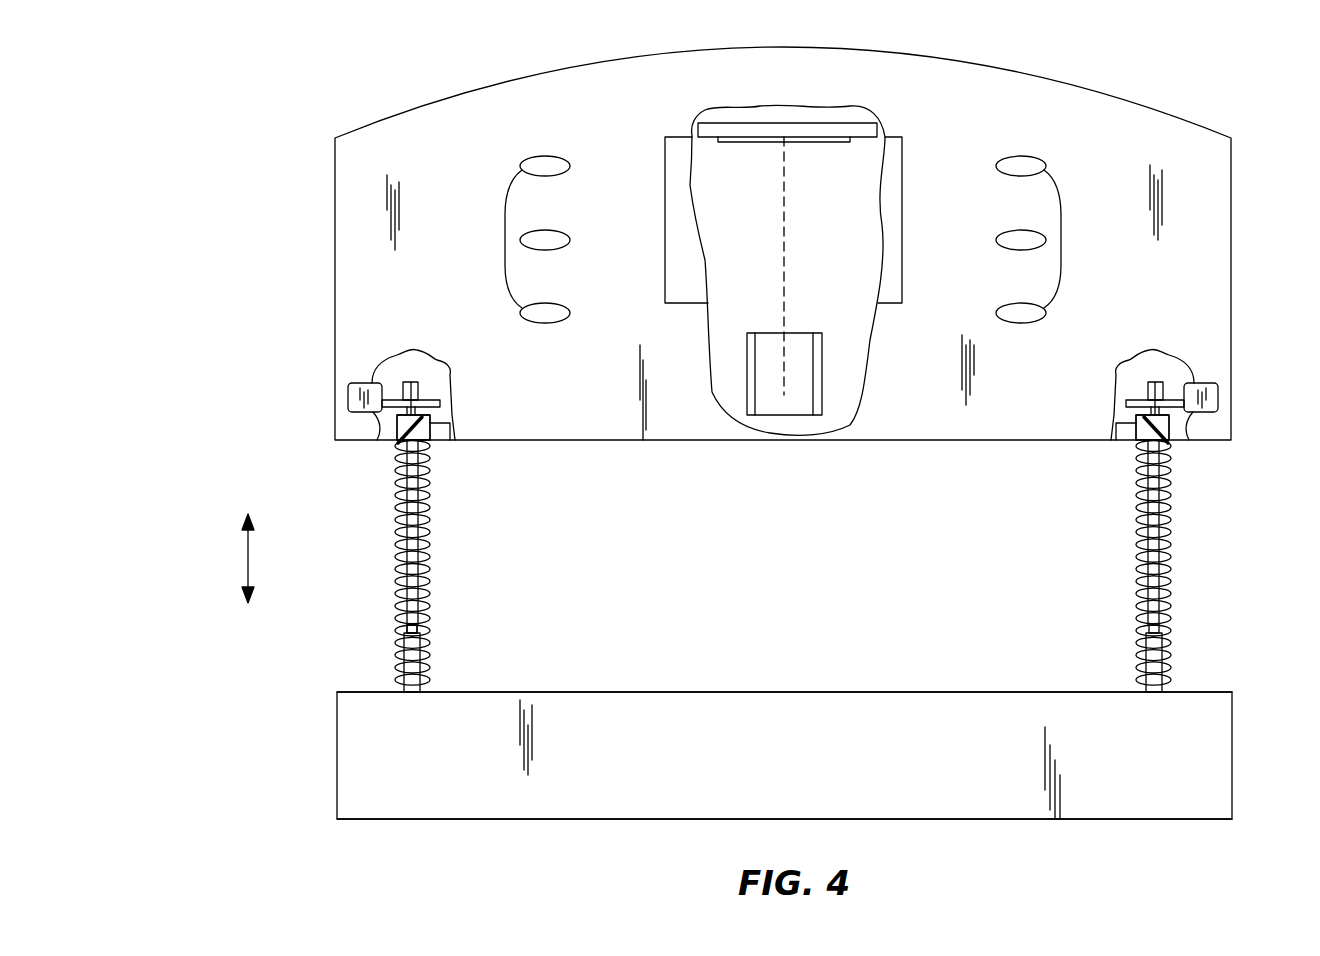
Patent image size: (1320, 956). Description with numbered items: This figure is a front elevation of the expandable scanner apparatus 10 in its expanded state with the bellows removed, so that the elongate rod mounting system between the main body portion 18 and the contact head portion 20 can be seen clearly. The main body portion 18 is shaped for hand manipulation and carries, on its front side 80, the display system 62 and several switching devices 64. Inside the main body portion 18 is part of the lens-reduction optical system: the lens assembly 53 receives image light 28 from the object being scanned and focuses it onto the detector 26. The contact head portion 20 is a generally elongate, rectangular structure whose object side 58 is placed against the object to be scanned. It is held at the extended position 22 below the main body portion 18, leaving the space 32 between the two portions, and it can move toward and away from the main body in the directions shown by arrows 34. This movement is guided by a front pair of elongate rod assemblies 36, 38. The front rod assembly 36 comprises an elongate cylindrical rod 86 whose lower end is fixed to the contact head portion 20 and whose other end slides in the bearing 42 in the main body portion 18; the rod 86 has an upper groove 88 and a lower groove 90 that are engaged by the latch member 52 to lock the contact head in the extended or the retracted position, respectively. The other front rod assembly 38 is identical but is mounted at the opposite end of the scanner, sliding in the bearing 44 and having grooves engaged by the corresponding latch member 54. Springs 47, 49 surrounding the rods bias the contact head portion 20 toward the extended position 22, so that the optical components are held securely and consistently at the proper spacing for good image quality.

The expandable scanner apparatus 10 is at (255, 88).
The main body portion 18 is at (325, 212).
The front side 80 is at (762, 88).
The switching devices 64 is at (505, 240).
The display system 62 is at (902, 180).
The detector 26 is at (767, 143).
The image light 28 is at (786, 233).
The lens assembly 53 is at (822, 372).
The latch member 52 is at (348, 398).
The upper groove 88 is at (437, 372).
The bearing 42 is at (443, 420).
The latch member 54 is at (1217, 398).
The bearing 44 is at (1140, 420).
The front rod assembly 36 is at (413, 566).
The elongate cylindrical rod 86 is at (430, 577).
The spring 47 is at (430, 510).
The lower groove 90 is at (420, 628).
The front rod assembly 38 is at (1155, 566).
The spring 49 is at (1172, 510).
The space 32 is at (792, 588).
The arrows 34 is at (248, 557).
The contact head portion 20 is at (327, 754).
The extended position 22 is at (337, 785).
The object side 58 is at (1167, 819).